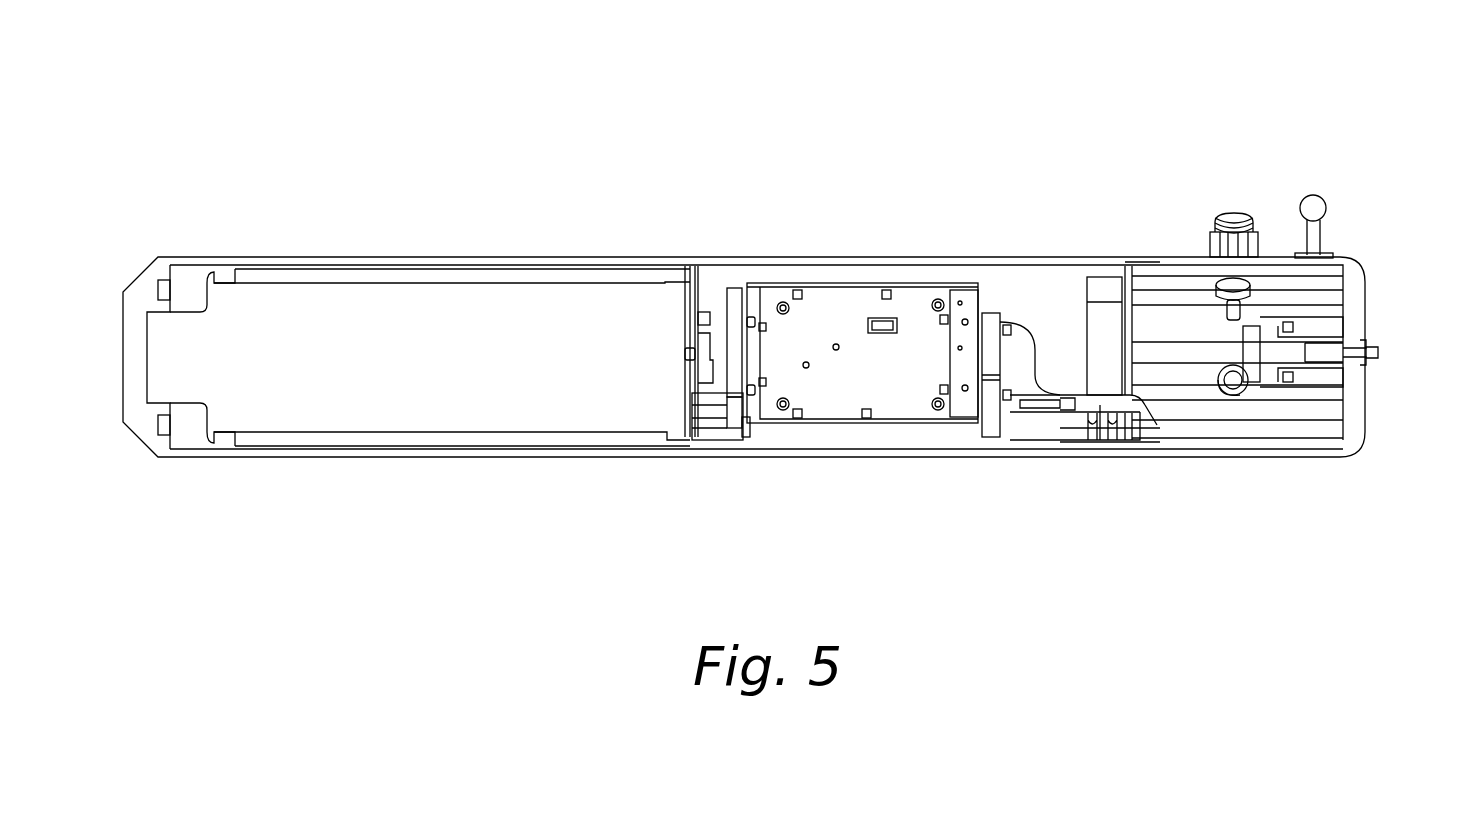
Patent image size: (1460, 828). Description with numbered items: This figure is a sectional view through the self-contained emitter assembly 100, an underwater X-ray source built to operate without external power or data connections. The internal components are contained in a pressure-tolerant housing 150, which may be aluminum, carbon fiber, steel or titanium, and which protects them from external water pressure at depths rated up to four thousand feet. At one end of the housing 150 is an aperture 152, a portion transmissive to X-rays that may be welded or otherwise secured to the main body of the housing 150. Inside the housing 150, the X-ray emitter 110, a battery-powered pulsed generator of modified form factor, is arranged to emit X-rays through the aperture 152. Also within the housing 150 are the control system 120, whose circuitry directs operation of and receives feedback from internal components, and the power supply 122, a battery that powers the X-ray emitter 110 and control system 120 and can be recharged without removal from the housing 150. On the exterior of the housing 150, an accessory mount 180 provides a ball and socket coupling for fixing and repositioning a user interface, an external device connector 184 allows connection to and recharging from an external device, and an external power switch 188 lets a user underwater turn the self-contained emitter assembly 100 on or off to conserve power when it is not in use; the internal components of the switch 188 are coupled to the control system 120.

The self-contained emitter assembly 100 is at (803, 178).
The X-ray emitter 110 is at (375, 403).
The control system 120 is at (838, 382).
The power supply 122 is at (1065, 358).
The housing 150 is at (634, 445).
The aperture 152 is at (140, 438).
The accessory mount 180 is at (1318, 233).
The external device connector 184 is at (1235, 213).
The external power switch 188 is at (1368, 345).